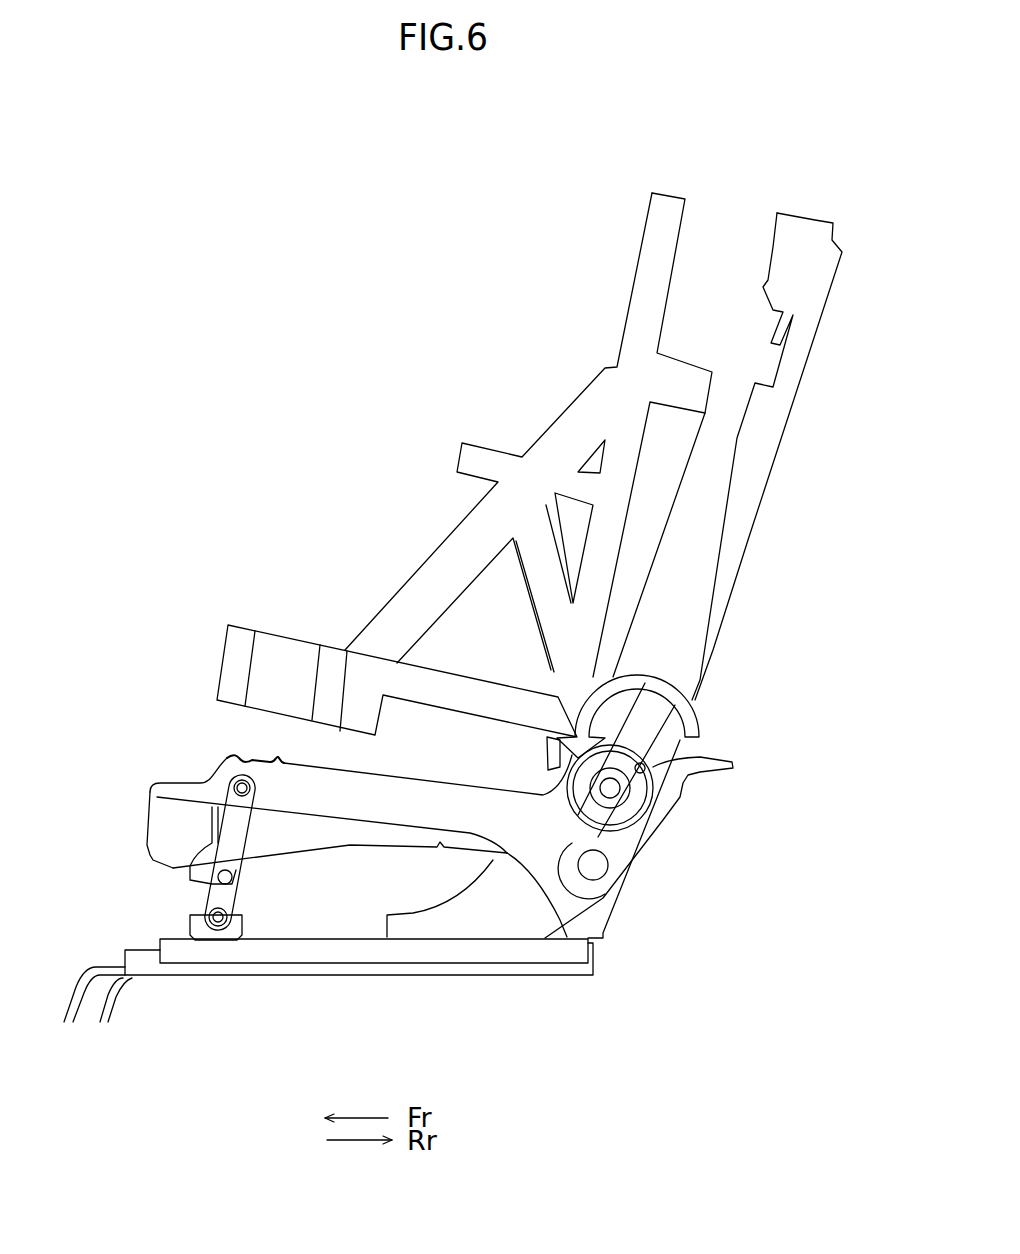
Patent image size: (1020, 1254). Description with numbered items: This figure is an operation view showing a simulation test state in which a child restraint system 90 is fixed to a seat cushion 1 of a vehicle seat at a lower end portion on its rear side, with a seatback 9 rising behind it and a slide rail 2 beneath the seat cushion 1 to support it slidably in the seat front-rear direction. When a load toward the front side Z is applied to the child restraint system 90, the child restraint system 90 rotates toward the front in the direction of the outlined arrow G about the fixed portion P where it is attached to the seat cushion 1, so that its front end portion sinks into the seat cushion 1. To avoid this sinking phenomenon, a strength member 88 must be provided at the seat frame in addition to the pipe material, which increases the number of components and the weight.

The child restraint system 90 is at (368, 255).
The seatback 9 is at (757, 553).
The strength member 88 is at (247, 753).
The seat cushion 1 is at (352, 860).
The slide rail 2 is at (363, 993).
The direction of outlined arrow G is at (636, 672).
The fixed portion P is at (655, 765).
The front side Z is at (457, 457).